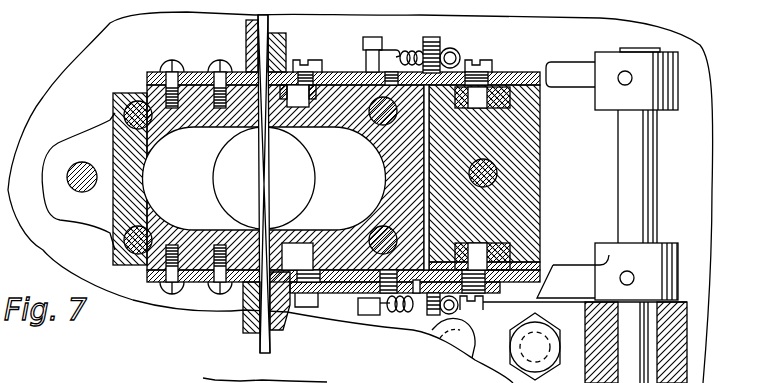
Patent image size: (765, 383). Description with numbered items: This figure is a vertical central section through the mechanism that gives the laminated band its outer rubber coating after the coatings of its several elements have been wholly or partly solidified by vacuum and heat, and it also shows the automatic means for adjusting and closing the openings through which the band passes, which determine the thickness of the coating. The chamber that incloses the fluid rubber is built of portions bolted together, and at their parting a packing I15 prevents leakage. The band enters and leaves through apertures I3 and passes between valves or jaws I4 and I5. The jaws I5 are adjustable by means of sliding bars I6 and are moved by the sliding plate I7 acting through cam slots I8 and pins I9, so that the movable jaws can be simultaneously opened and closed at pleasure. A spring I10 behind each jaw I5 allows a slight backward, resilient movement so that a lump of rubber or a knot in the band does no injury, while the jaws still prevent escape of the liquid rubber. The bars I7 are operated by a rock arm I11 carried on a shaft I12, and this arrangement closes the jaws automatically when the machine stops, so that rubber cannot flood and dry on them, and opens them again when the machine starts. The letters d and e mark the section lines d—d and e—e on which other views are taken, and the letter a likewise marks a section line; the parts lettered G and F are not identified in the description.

The casing G is at (85, 46).
The valve disc F is at (268, 162).
The apertures I3 is at (286, 56).
The valves or jaws I4 is at (247, 26).
The adjustable jaws I5 is at (324, 56).
The sliding bars I6 is at (496, 57).
The sliding plate I7 is at (512, 97).
The cam slots I8 is at (512, 252).
The pins I9 is at (507, 74).
The spring I10 is at (409, 54).
The rock arm I11 is at (648, 260).
The shaft I12 is at (642, 162).
The packing I15 is at (135, 375).
The section line a— a is at (365, 7).
The section line d— d is at (340, 335).
The section line e— e is at (250, 4).